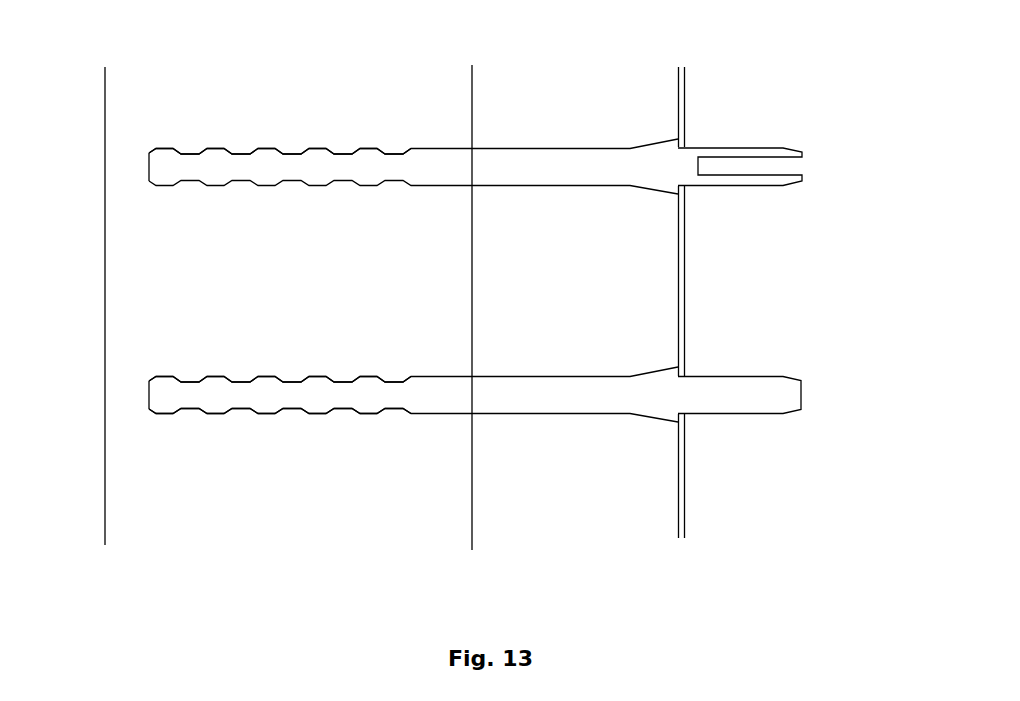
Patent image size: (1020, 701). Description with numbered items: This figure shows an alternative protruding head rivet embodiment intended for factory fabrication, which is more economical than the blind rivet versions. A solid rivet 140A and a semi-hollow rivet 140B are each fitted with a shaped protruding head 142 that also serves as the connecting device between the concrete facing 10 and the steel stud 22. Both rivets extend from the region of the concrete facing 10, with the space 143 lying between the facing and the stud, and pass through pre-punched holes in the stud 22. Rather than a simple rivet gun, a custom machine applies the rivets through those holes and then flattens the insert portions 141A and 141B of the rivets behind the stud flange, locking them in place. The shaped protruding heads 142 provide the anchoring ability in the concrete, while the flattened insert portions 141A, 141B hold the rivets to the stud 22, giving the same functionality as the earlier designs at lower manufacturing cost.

The concrete facing 10 is at (183, 273).
The steel stud 22 is at (680, 442).
The solid rivet 140A is at (575, 413).
The semi-hollow rivet 140B is at (547, 187).
The insert portion of solid rivet 141A is at (747, 388).
The insert portion of semi-hollow rivet 141B is at (762, 150).
The shaped protruding head 142 is at (299, 281).
The gap 143 is at (587, 97).